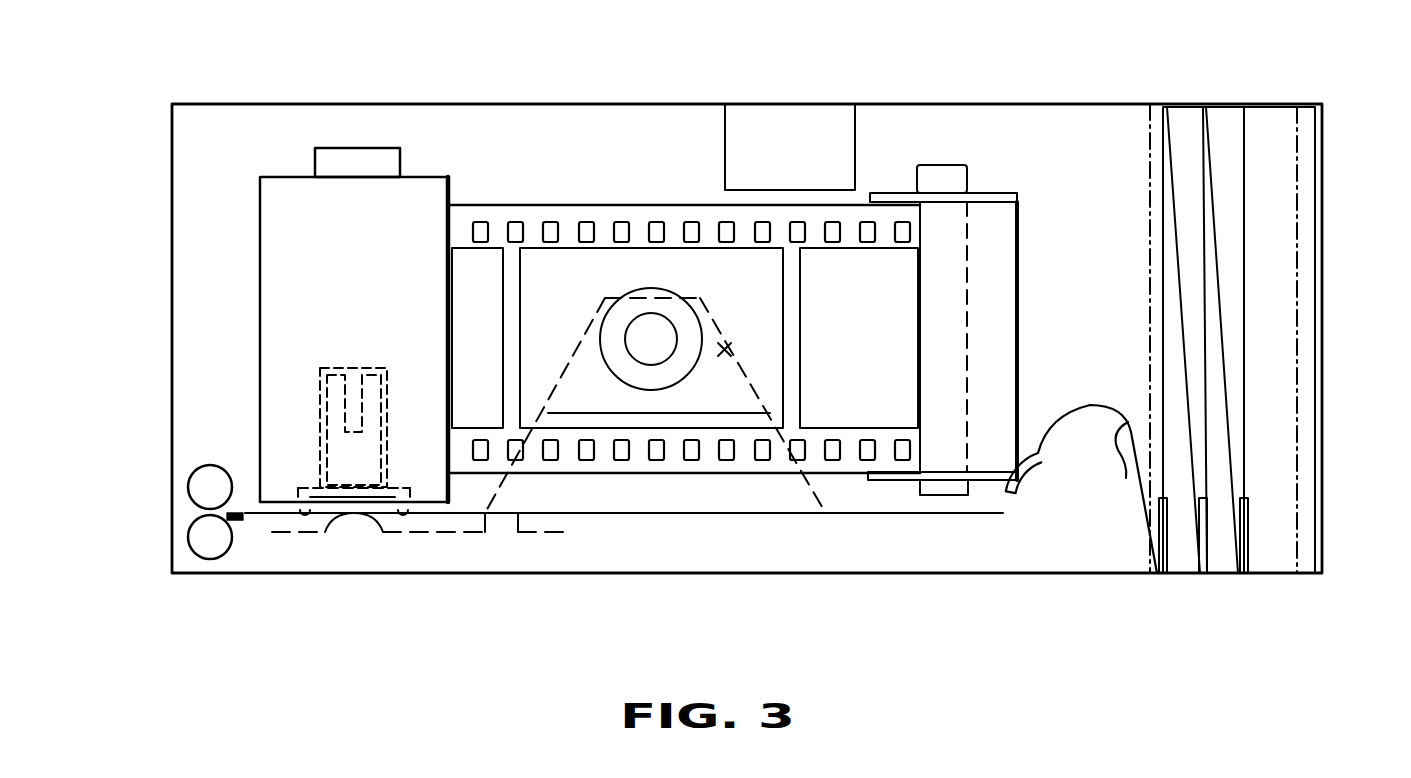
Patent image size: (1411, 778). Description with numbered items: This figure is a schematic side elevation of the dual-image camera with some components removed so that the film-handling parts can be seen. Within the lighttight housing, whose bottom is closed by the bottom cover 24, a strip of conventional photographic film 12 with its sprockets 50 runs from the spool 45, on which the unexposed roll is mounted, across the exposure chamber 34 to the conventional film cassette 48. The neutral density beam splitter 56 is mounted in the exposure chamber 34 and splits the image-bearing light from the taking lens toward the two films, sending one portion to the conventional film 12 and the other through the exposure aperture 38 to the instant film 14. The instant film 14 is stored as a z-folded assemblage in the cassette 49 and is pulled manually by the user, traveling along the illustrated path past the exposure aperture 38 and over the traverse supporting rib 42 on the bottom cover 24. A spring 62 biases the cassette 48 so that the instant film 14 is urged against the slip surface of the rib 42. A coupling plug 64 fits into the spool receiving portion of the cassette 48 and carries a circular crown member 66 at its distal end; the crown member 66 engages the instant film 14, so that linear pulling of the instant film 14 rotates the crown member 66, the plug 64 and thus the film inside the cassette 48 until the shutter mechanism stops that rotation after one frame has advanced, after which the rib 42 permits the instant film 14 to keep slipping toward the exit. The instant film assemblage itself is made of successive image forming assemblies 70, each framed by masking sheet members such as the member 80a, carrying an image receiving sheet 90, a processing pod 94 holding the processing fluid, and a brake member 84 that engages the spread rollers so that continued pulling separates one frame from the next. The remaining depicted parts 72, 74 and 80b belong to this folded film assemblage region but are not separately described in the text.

The conventional photographic film 12 is at (567, 217).
The instant film 14 is at (250, 498).
The bottom cover 24 is at (608, 577).
The exposure chamber 34 is at (800, 485).
The exposure aperture 38 is at (715, 490).
The traverse supporting rib 42 is at (333, 528).
The spool 45 is at (940, 172).
The 35 mm cassette 48 is at (450, 188).
The cassette 49 is at (1148, 210).
The sprockets 50 is at (832, 236).
The neutral density beam splitter 56 is at (726, 343).
The spring 62 is at (403, 158).
The coupling plug 64 is at (380, 395).
The circular crown member 66 is at (304, 470).
The image forming assembly 70 is at (1100, 392).
The door 72 is at (1175, 273).
The spring member 74 is at (1217, 233).
The positive masking sheet member 80a is at (1096, 461).
The hook 80b is at (1185, 350).
The brake member 84 is at (238, 522).
The image receiving sheet 90 is at (1170, 472).
The processing pod 94 is at (1032, 487).